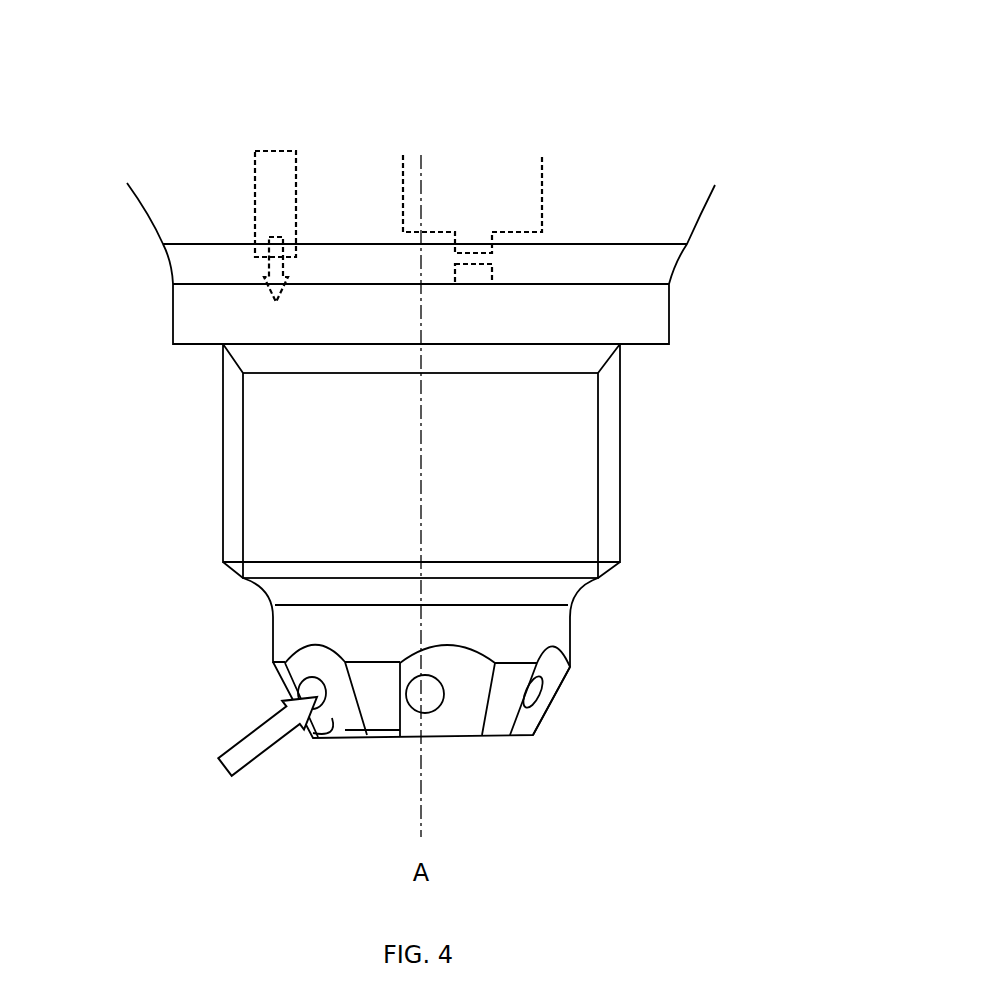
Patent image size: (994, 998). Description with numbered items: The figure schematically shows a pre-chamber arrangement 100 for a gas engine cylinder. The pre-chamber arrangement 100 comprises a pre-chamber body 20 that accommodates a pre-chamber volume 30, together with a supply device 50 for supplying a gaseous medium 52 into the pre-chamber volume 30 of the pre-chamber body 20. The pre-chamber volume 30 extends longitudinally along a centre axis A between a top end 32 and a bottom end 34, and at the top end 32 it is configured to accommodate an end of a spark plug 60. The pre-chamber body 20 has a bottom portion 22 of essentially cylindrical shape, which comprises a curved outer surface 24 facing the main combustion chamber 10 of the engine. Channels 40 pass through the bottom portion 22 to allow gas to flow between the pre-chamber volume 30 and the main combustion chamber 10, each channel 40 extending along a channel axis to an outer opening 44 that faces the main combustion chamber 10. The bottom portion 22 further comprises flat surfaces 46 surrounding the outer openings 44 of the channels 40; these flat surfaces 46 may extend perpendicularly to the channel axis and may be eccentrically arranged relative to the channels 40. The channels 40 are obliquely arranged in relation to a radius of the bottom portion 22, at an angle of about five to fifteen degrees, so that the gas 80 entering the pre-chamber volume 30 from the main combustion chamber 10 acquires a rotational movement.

The pre-chamber arrangement 100 is at (606, 113).
The main combustion chamber 10 is at (618, 771).
The pre-chamber body 20 is at (620, 410).
The bottom portion 22 is at (570, 617).
The curved outer surface 24 is at (273, 650).
The pre-chamber volume 30 is at (325, 465).
The top end 32 is at (650, 228).
The bottom end 34 is at (380, 705).
The channels 40 is at (430, 690).
The outer opening 44 is at (540, 700).
The flat surfaces 46 is at (330, 723).
The supply device 50 is at (255, 162).
The gaseous medium 52 is at (285, 263).
The spark plug 60 is at (492, 278).
The gas 80 is at (250, 732).